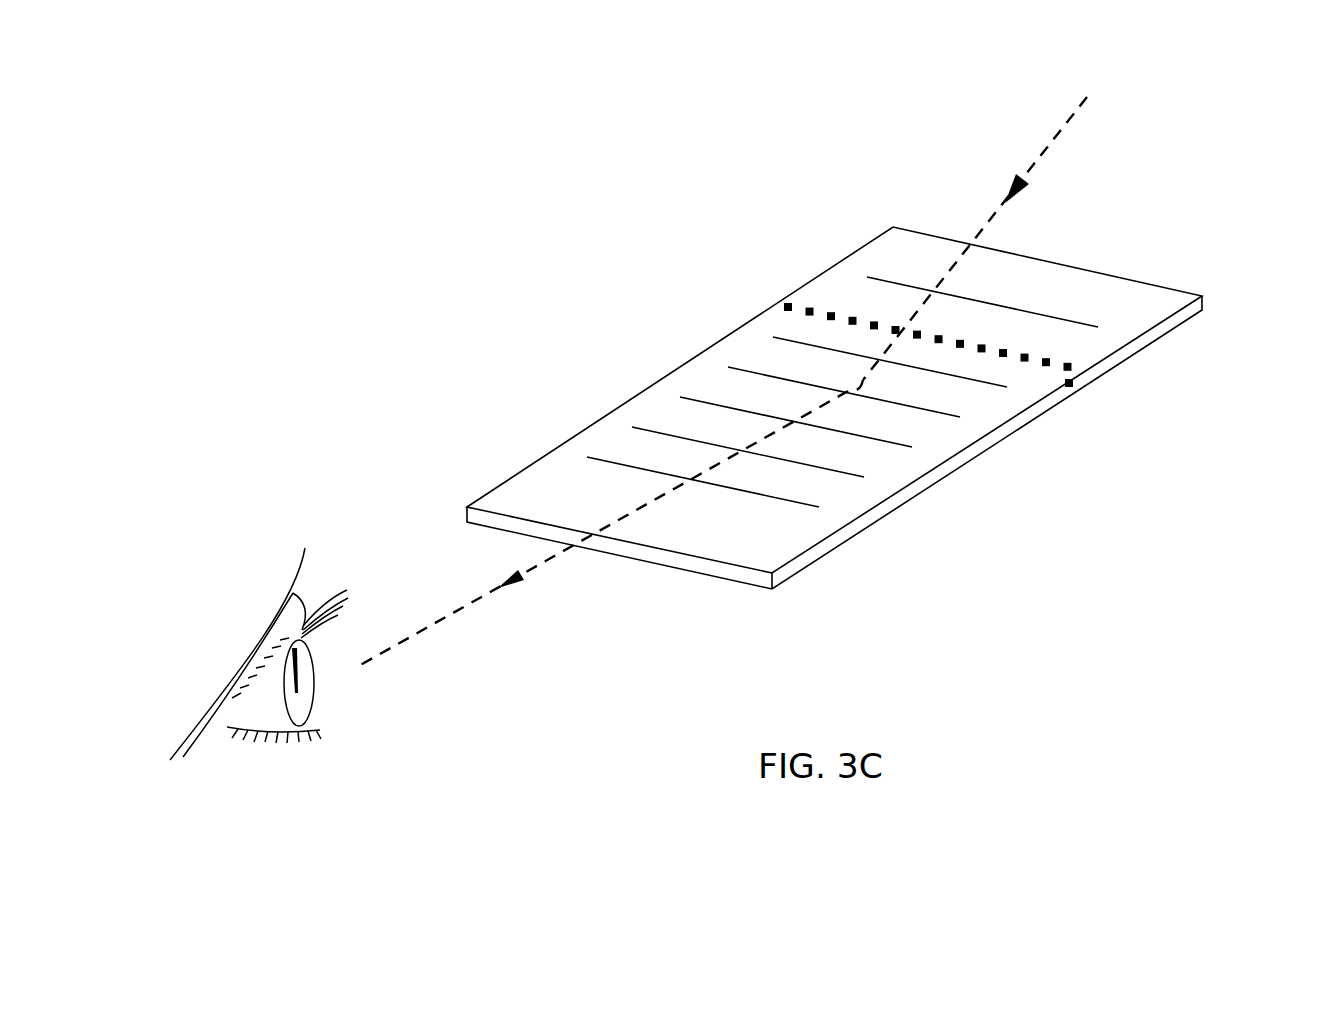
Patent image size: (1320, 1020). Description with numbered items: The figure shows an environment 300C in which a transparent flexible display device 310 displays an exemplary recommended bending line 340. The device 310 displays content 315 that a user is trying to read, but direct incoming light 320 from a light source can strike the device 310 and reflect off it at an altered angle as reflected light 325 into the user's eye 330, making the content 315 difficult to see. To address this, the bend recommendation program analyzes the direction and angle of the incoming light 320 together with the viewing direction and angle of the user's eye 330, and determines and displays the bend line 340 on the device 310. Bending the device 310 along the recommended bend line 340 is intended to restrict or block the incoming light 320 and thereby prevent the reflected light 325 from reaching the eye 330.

The near-eye display system 300C is at (1194, 222).
The device 310 is at (627, 402).
The content 315 is at (750, 372).
The incoming light 320 is at (1043, 150).
The reflected light 325 is at (473, 603).
The user's eye 330 is at (215, 641).
The bending line 340 is at (852, 310).